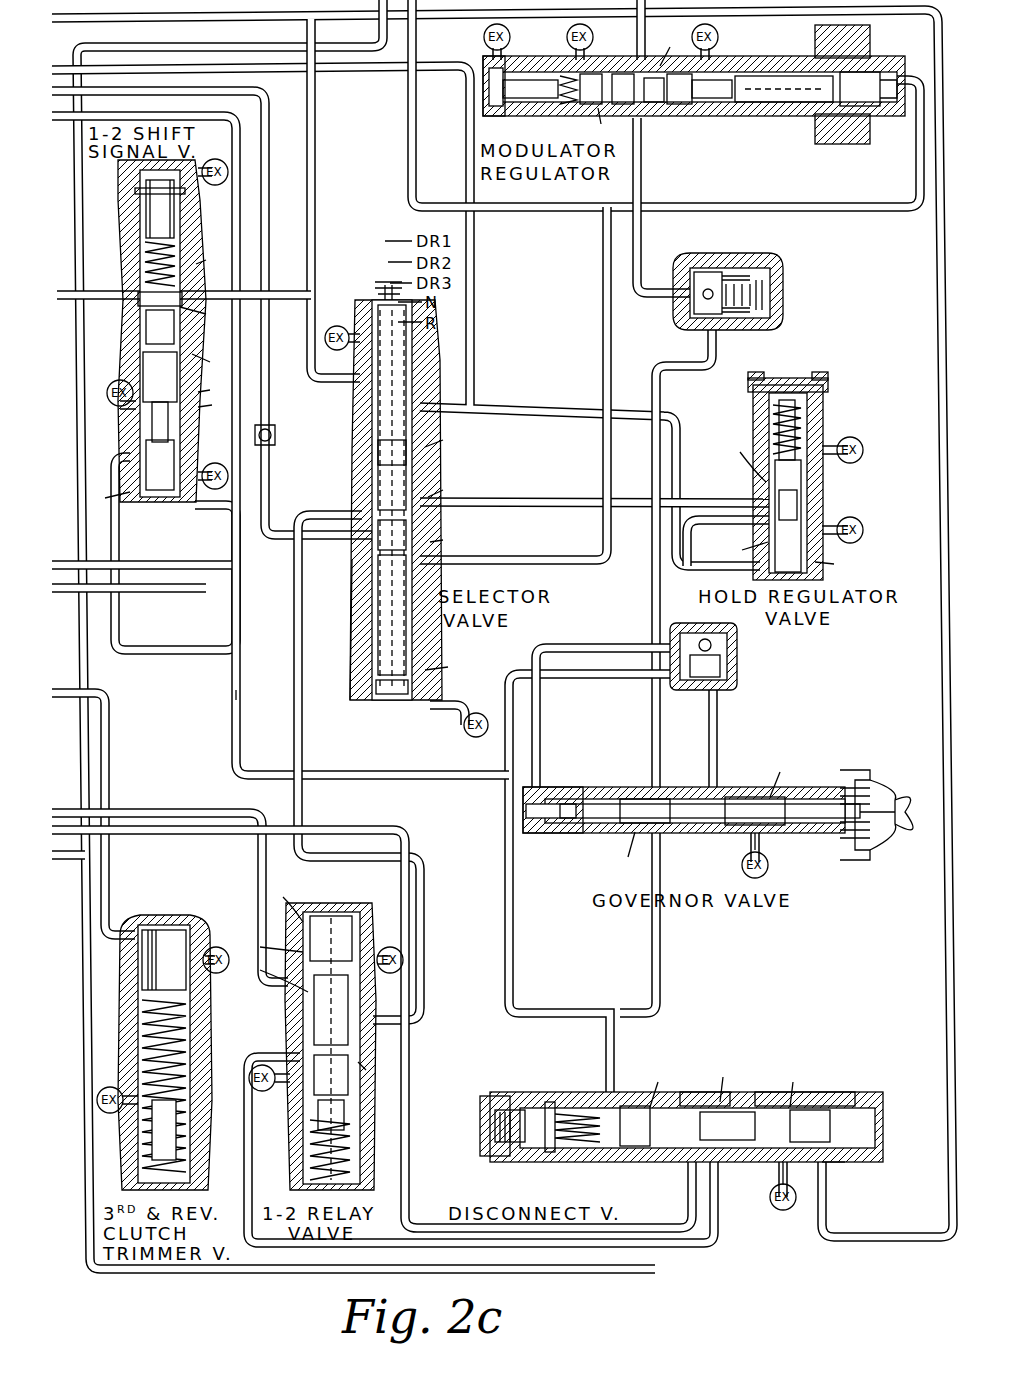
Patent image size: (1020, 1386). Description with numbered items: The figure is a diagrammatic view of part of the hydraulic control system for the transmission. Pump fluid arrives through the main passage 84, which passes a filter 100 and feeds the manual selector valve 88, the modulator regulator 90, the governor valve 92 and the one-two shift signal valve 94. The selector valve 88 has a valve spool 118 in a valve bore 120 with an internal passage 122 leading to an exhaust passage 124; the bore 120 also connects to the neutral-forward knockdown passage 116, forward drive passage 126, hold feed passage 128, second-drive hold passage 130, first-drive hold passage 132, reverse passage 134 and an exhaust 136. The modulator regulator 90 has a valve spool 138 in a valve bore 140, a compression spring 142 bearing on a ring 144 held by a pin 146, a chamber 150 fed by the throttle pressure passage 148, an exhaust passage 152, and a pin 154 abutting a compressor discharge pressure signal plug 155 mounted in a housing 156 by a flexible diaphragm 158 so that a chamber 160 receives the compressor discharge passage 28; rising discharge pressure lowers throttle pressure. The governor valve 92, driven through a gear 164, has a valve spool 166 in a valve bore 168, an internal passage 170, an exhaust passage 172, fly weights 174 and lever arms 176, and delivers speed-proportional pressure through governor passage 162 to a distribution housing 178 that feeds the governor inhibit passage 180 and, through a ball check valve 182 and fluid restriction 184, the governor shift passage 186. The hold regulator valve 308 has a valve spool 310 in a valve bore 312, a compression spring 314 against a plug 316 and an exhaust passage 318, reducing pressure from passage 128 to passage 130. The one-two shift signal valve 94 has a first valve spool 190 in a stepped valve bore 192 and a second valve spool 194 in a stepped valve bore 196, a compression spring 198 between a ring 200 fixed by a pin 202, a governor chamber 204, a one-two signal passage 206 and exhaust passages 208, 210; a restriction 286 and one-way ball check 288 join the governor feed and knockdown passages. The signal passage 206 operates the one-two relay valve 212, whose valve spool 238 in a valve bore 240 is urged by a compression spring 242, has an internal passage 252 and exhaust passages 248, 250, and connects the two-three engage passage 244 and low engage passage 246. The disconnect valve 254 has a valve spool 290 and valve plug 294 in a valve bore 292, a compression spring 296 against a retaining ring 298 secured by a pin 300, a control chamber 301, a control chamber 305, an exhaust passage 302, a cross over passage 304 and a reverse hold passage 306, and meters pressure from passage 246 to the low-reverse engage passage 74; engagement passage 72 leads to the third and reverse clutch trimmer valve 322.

The throttle pressure passage 148 is at (100, 19).
The neutral-forward knockdown passage 116 is at (58, 98).
The valve spool 290 is at (752, 1205).
The one-two shift signal valve 94 is at (110, 220).
The pin 202 is at (190, 192).
The ring 200 is at (180, 202).
The compression spring 198 is at (175, 246).
The stepped valve bore 196 is at (135, 302).
The second valve spool 194 is at (140, 332).
The main passage 84 is at (642, 262).
The stepped valve bore 192 is at (178, 407).
The first valve spool 190 is at (168, 432).
The exhaust passage 210 is at (130, 437).
The governor chamber 204 is at (168, 497).
The exhaust passage 208 is at (218, 508).
The one-way ball check 288 is at (278, 430).
The restriction 286 is at (273, 446).
The forward drive passage 126 is at (336, 512).
The governor shift passage 186 is at (228, 600).
The internal passage 122 is at (358, 594).
The manual selector valve 88 is at (348, 636).
The low-reverse engage passage 74 is at (368, 52).
The 1-2 signal passage 206 is at (176, 682).
The DR2 hold passage 130 is at (345, 74).
The ring 144 is at (500, 80).
The pin 146 is at (498, 118).
The exhaust passage 152 is at (580, 72).
The compression spring 142 is at (565, 104).
The valve bore 140 is at (645, 50).
The valve spool 138 is at (652, 106).
The chamber 150 is at (680, 108).
The pin 154 is at (722, 108).
The modulator regulator 90 is at (664, 122).
The compressor discharge pressure signal plug 155 is at (748, 78).
The housing 156 is at (855, 30).
The chamber 160 is at (870, 76).
The flexible diaphragm 158 is at (855, 130).
The compressor discharge passage 28 is at (408, 140).
The filter 100 is at (805, 316).
The exhaust 136 is at (380, 286).
The DR1 hold passage 132 is at (350, 345).
The valve bore 120 is at (430, 377).
The valve spool 118 is at (406, 452).
The hold feed passage 128 is at (510, 506).
The exhaust passage 124 is at (460, 720).
The plug 316 is at (808, 397).
The compression spring 314 is at (806, 430).
The valve spool 310 is at (770, 480).
The valve bore 312 is at (806, 507).
The exhaust passage 318 is at (850, 520).
The hold regulator valve 308 is at (872, 540).
The ball check valve 182 is at (712, 647).
The fluid restriction 184 is at (725, 670).
The distribution housing 178 is at (737, 686).
The governor inhibit passage 180 is at (632, 680).
The governor passage 162 is at (708, 745).
The gear 164 is at (565, 790).
The internal passage 170 is at (640, 798).
The valve bore 168 is at (740, 797).
The valve spool 166 is at (700, 820).
The exhaust passage 172 is at (770, 867).
The lever arms 176 is at (898, 837).
The fly weights 174 is at (886, 890).
The governor valve 92 is at (572, 860).
The reverse passage 134 is at (172, 810).
The engagement passage 72 is at (108, 880).
The 2-3 engage passage 244 is at (255, 880).
The third and reverse clutch trimmer valve 322 is at (186, 920).
The exhaust passage 250 is at (372, 940).
The internal passage 252 is at (300, 1002).
The valve spool 238 is at (300, 1032).
The valve bore 240 is at (378, 1042).
The exhaust passage 248 is at (300, 1097).
The compression spring 242 is at (355, 1152).
The low engage passage 246 is at (250, 1150).
The 1-2 relay valve 212 is at (388, 1174).
The retaining ring 298 is at (550, 1100).
The pin 300 is at (548, 1102).
The control chamber 305 is at (590, 1112).
The compression spring 296 is at (638, 1102).
The cross over passage 304 is at (700, 1092).
The valve bore 292 is at (770, 1110).
The reverse hold passage 306 is at (818, 1092).
The control chamber 301 is at (830, 1110).
The disconnect valve 254 is at (616, 1190).
The exhaust passage 302 is at (788, 1212).
The valve plug 294 is at (848, 1164).